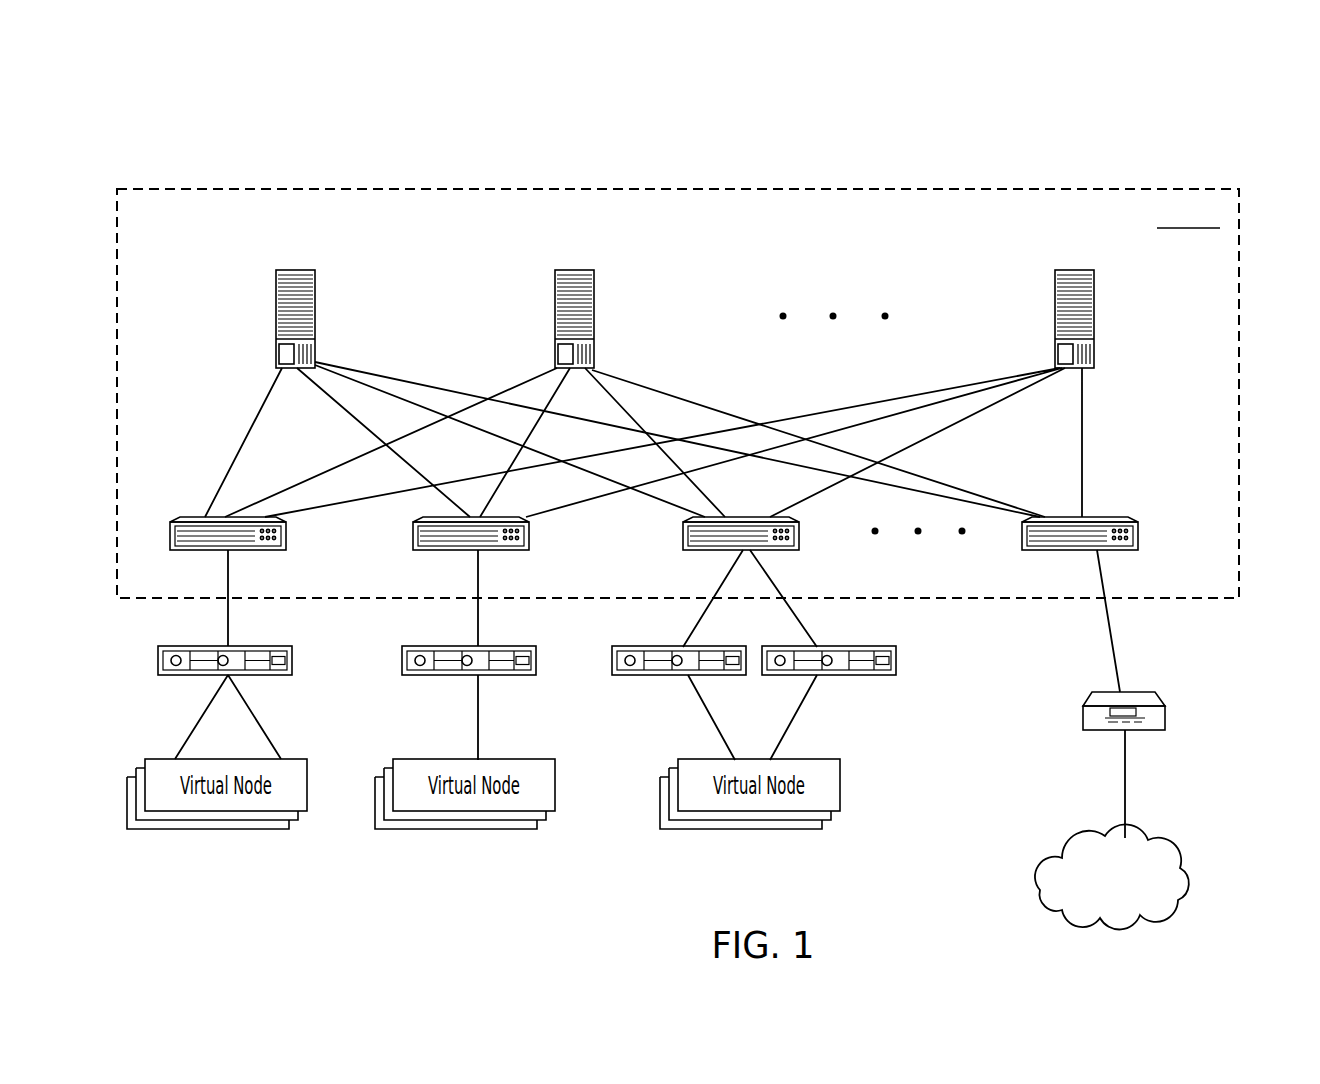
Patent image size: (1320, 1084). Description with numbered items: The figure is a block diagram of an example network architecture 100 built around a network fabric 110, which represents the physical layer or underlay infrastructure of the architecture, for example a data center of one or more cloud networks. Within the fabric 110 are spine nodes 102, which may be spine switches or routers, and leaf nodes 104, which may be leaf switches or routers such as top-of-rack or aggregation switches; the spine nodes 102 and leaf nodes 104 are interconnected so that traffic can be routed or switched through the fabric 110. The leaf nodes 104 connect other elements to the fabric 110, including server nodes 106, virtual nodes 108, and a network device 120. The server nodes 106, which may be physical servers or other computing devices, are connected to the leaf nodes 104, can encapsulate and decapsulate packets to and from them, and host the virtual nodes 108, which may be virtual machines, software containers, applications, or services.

The network architecture 100 is at (1238, 114).
The spine nodes 102 is at (276, 315).
The leaf nodes 104 is at (286, 535).
The server nodes 106 is at (158, 660).
The virtual nodes 108 is at (307, 771).
The network fabric 110 is at (1222, 214).
The network device 120 is at (1083, 713).